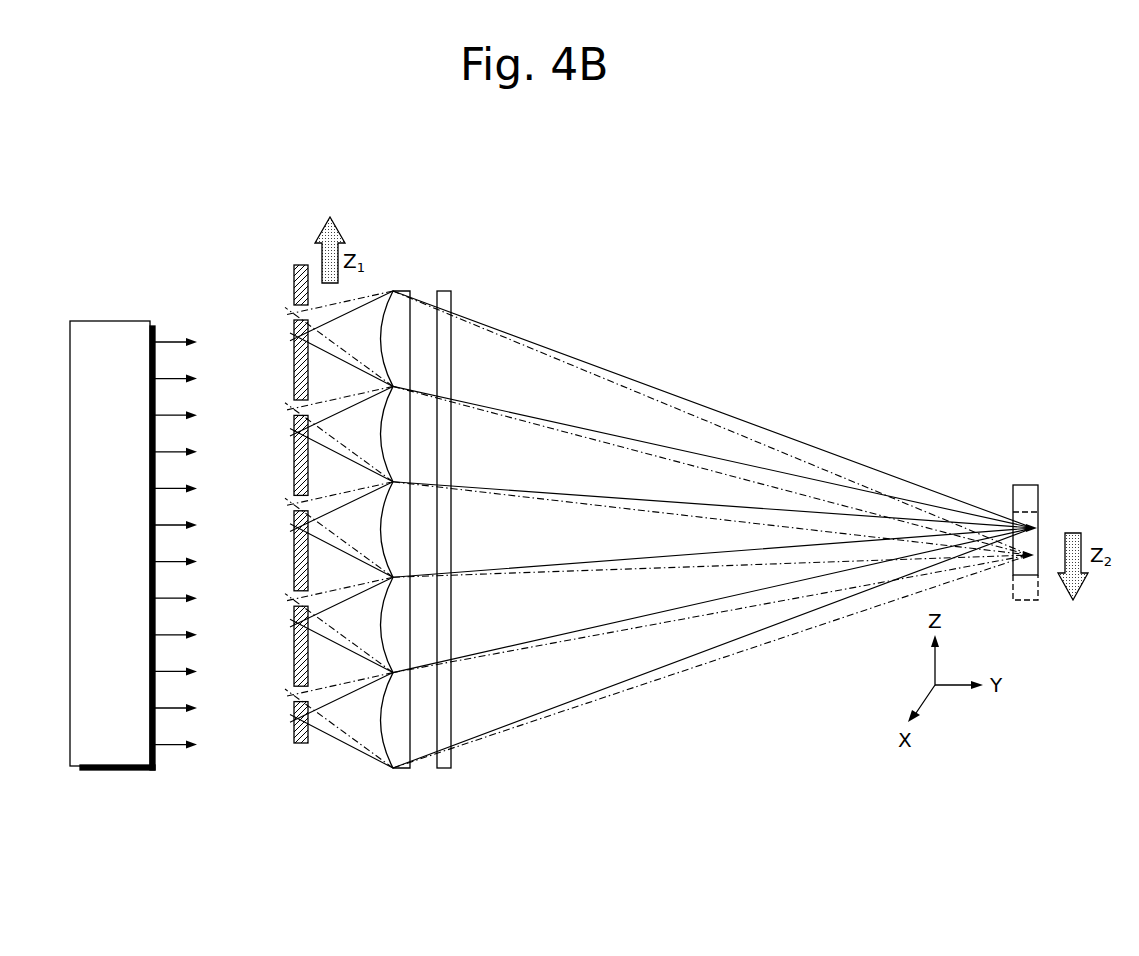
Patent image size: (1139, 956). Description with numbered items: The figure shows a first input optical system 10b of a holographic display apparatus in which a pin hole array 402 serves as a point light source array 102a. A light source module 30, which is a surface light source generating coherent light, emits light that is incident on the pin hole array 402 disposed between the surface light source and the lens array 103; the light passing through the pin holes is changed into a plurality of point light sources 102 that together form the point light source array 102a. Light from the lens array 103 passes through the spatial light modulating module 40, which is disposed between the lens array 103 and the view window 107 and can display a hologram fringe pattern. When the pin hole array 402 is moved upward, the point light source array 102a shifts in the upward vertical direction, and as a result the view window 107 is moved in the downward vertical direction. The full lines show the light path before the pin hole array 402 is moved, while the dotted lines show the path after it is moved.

The light source module 30 is at (118, 320).
The pin hole array 402 is at (296, 265).
The point light sources 102 is at (292, 312).
The point light source array 102a is at (243, 750).
The lens array 103 is at (401, 290).
The spatial light modulating module 40 is at (446, 290).
The first input optical system 10b is at (829, 233).
The view window 107 is at (1025, 485).